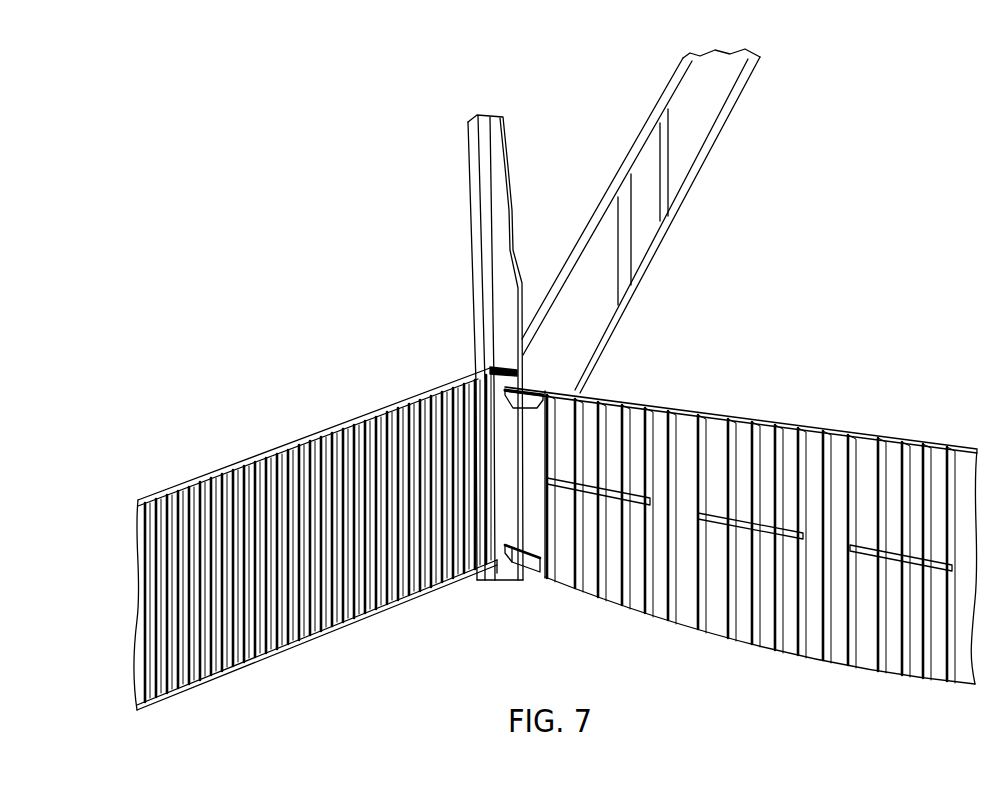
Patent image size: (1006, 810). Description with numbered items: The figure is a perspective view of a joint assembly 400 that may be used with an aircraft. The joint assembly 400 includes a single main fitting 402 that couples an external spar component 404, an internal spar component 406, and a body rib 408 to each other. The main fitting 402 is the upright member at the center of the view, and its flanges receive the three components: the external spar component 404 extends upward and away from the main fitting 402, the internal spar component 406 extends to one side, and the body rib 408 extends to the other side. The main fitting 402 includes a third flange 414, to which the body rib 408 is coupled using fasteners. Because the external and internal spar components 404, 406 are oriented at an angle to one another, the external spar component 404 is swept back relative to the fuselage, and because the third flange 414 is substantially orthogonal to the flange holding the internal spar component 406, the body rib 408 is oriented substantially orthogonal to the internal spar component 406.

The joint assembly 400 is at (824, 216).
The main fitting 402 is at (503, 237).
The external spar component 404 is at (648, 133).
The internal spar component 406 is at (323, 435).
The body rib 408 is at (868, 445).
The third flange 414 is at (503, 548).